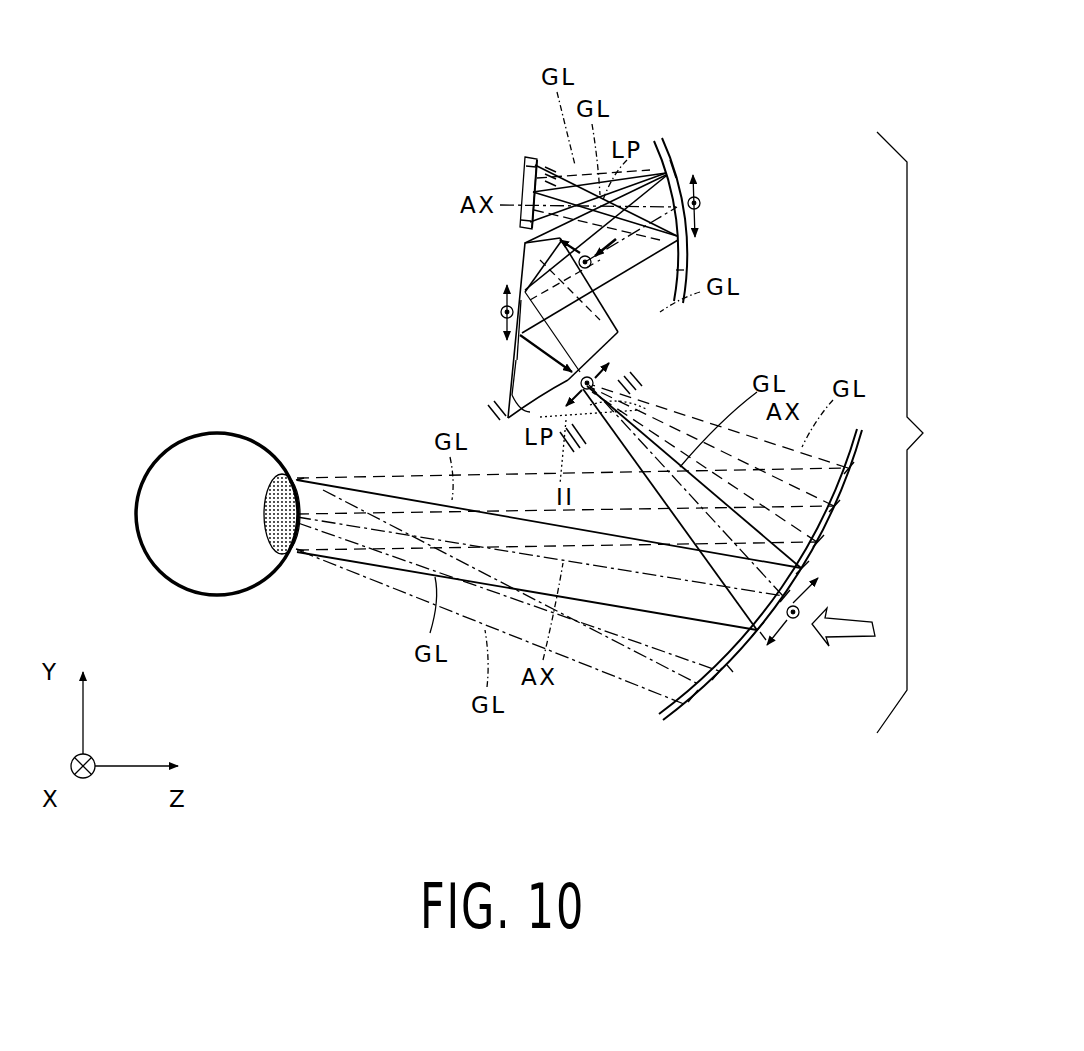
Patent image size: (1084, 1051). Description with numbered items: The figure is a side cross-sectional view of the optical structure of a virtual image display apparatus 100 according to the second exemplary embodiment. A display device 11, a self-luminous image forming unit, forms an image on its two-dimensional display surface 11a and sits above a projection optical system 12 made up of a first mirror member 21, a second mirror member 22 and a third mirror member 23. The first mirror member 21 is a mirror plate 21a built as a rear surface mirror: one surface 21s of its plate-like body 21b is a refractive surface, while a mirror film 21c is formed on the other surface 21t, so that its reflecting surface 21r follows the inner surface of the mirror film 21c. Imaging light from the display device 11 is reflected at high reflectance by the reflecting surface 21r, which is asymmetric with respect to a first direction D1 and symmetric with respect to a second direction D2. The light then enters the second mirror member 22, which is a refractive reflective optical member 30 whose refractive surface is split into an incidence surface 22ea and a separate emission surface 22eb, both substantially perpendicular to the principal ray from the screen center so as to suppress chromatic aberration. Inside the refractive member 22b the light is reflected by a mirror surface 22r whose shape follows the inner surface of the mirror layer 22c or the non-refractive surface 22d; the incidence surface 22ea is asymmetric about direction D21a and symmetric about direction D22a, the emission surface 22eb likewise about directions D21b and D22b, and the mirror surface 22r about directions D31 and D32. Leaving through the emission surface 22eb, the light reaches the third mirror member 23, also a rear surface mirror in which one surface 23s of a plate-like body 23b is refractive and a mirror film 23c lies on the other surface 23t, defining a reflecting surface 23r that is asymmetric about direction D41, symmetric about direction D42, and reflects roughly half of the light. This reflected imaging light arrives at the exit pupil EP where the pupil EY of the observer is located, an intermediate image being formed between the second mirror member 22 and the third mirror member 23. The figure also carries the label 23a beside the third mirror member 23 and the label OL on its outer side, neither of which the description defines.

The virtual image display apparatus 100 is at (372, 122).
The display device 11 is at (478, 161).
The display surface 11a is at (534, 190).
The projection optical system 12 is at (920, 432).
The first mirror member 21 is at (736, 176).
The mirror plate 21a is at (736, 176).
The one surface 21s is at (657, 170).
The plate-like body 21b is at (672, 168).
The mirror film 21c is at (767, 202).
The other surface 21t is at (684, 160).
The reflecting surface 21r is at (684, 263).
The second mirror member 22 is at (520, 329).
The refractive reflective optical member 30 is at (520, 329).
The incidence surface 22ea is at (614, 306).
The emission surface 22eb is at (600, 347).
The refractive member 22b is at (518, 423).
The mirror layer 22c is at (518, 347).
The non-refractive surface 22d is at (505, 372).
The mirror surface 22r is at (507, 397).
The third mirror member 23 is at (731, 622).
The see-through mirror 23a is at (731, 622).
The one surface 23s is at (687, 683).
The plate-like body 23b is at (727, 673).
The mirror film 23c is at (781, 611).
The other surface 23t is at (747, 643).
The reflecting surface 23r is at (760, 637).
The first direction D1 is at (706, 190).
The second direction D2 is at (703, 205).
The first direction D21a is at (556, 244).
The second direction D22a is at (578, 262).
The first direction D21b is at (610, 366).
The second direction D22b is at (600, 388).
The first direction D31 is at (500, 300).
The second direction D32 is at (500, 313).
The first direction D41 is at (803, 597).
The second direction D42 is at (800, 618).
The pupil EY is at (290, 500).
The exit pupil EP is at (300, 547).
The outside light OL is at (852, 637).